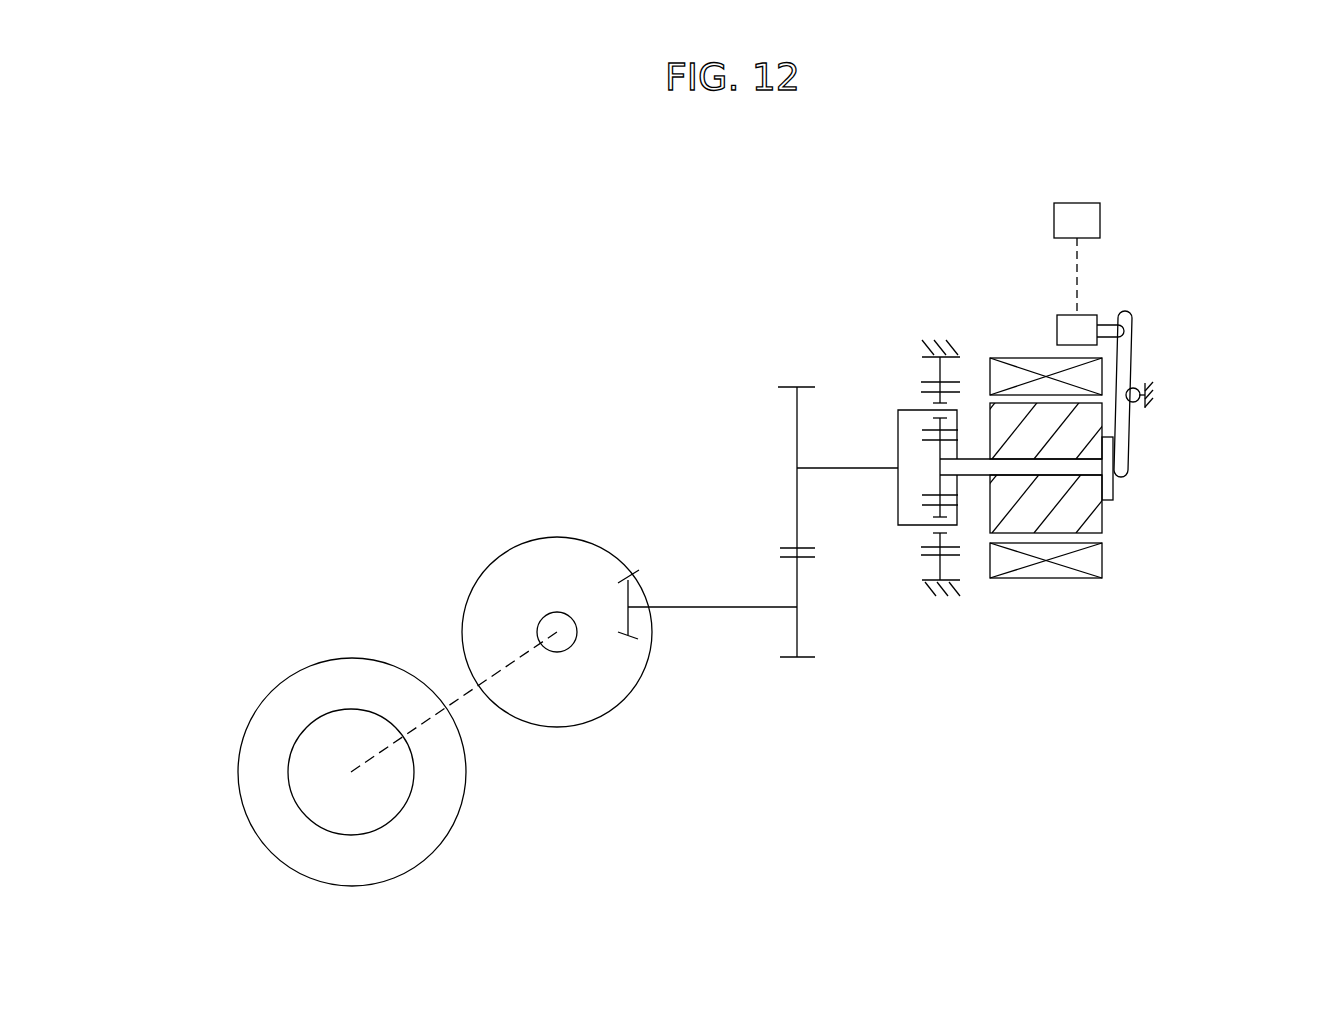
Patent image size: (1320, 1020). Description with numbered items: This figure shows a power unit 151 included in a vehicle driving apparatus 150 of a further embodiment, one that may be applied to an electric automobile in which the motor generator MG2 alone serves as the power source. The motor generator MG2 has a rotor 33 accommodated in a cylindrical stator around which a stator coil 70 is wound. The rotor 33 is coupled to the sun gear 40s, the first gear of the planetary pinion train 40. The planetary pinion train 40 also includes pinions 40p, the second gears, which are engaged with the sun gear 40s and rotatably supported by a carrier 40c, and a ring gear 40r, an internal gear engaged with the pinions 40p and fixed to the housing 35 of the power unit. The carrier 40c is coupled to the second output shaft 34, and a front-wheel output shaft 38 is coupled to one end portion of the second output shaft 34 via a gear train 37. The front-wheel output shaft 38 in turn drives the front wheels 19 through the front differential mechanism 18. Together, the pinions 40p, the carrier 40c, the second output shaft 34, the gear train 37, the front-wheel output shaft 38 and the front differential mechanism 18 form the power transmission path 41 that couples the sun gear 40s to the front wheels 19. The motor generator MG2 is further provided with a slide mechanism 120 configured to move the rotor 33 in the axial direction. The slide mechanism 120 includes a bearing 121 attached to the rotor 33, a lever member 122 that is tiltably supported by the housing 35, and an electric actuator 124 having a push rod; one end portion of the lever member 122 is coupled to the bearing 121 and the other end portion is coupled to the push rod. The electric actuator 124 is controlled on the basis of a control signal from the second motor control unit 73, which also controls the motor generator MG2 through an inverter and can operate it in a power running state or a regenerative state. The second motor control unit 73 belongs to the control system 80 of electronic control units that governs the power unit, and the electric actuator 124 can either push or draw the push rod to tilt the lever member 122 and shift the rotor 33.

The vehicle driving apparatus 150 is at (452, 220).
The power unit 151 is at (592, 340).
The front differential mechanism 18 is at (652, 703).
The front wheels 19 is at (250, 752).
The rotor 33 is at (1030, 540).
The second output shaft 34 is at (853, 470).
The housing 35 is at (952, 592).
The gear train 37 is at (807, 678).
The front-wheel output shaft 38 is at (718, 605).
The planetary pinion train 40 is at (930, 322).
The sun gear 40s is at (950, 435).
The pinions 40p is at (922, 388).
The carrier 40c is at (908, 527).
The ring gear 40r is at (930, 560).
The power transmission path 41 is at (742, 627).
The stator coil 70 is at (1065, 578).
The second motor control unit 73 is at (1082, 203).
The control system 80 is at (1130, 182).
The slide mechanism 120 is at (1155, 312).
The bearing 121 is at (1115, 490).
The lever member 122 is at (1128, 357).
The electric actuator 124 is at (1087, 315).
The motor generator MG2 is at (1024, 338).